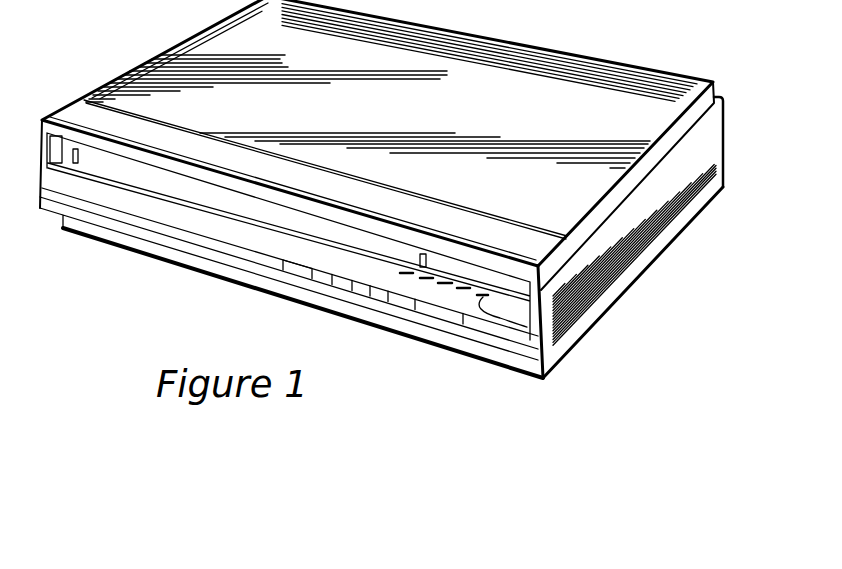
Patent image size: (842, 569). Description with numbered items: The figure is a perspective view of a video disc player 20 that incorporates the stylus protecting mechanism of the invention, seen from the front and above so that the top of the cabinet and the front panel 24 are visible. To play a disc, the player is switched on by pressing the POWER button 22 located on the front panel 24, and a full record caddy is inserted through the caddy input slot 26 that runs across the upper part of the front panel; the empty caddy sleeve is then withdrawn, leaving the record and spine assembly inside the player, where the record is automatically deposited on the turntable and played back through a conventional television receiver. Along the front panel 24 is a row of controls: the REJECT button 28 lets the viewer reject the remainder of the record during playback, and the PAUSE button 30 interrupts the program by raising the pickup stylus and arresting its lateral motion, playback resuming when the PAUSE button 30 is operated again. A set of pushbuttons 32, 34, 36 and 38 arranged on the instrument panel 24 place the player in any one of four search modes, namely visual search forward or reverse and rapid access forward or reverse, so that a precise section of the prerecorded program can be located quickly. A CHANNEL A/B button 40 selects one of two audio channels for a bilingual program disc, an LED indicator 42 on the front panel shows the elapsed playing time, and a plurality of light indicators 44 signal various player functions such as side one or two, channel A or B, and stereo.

The video disc player 20 is at (631, 384).
The POWER button 22 is at (500, 342).
The front panel 24 is at (205, 252).
The caddy input slot 26 is at (170, 186).
The REJECT button 28 is at (465, 324).
The PAUSE button 30 is at (440, 318).
The pushbutton 32 is at (372, 296).
The pushbutton 34 is at (353, 290).
The pushbutton 36 is at (333, 285).
The pushbutton 38 is at (313, 280).
The CHANNEL A/B button 40 is at (300, 262).
The LED indicator 42 is at (460, 256).
The light indicators 44 is at (543, 379).